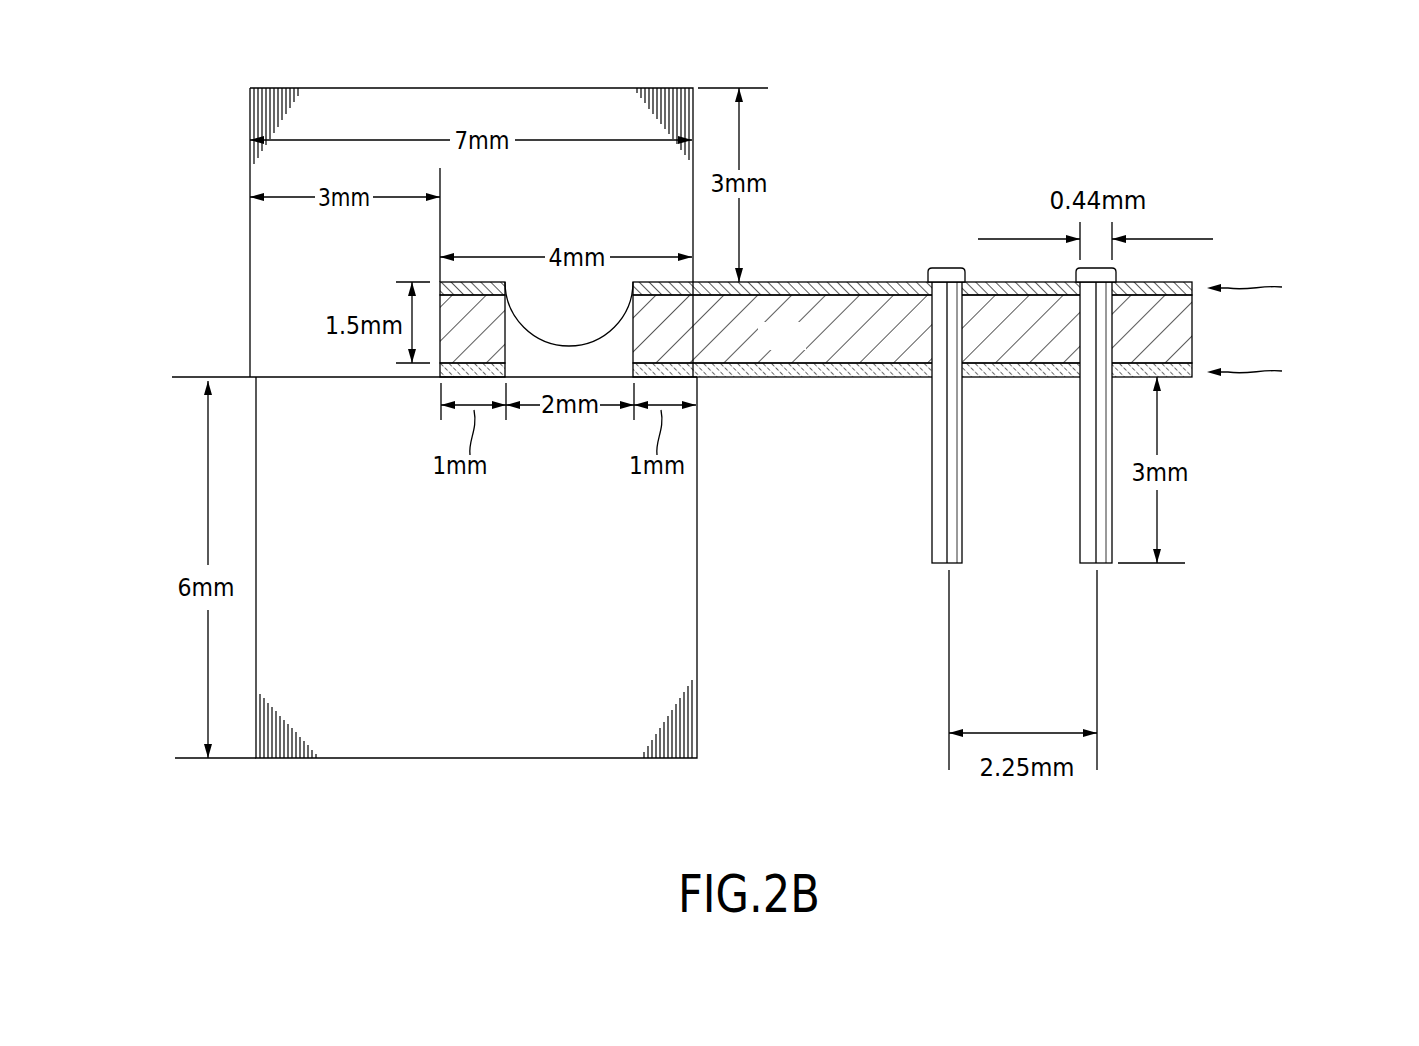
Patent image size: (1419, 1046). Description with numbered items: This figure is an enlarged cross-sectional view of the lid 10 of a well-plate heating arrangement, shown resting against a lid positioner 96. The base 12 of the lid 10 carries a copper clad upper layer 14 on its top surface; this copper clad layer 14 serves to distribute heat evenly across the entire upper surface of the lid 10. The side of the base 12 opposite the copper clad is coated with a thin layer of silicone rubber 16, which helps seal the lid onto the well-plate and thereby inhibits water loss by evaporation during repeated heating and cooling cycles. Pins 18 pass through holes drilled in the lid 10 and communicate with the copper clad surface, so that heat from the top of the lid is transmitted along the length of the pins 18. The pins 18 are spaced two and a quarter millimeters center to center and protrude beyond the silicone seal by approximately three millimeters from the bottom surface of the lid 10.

The lid 10 is at (910, 321).
The base 12 is at (1170, 330).
The copper clad layer 14 is at (820, 282).
The silicone rubber coating 16 is at (854, 377).
The pins 18 is at (932, 522).
The lid positioner 96 is at (698, 695).